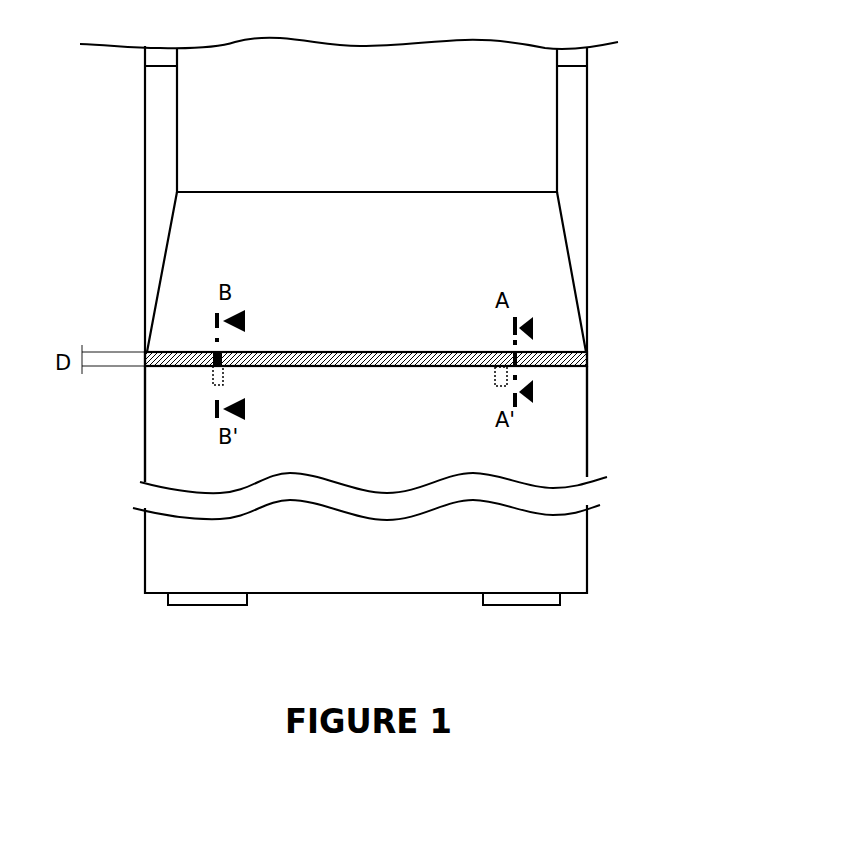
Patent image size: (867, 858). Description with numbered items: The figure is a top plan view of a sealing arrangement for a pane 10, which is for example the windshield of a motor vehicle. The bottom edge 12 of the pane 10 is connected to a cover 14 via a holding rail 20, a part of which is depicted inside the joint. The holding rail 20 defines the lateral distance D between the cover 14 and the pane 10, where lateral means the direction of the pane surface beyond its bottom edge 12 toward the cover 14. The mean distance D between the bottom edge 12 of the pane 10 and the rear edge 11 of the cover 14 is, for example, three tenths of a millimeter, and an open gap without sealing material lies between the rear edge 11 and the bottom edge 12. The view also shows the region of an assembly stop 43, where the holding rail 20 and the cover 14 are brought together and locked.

The pane 10 is at (558, 260).
The rear edge 11 is at (162, 382).
The bottom edge 12 is at (167, 342).
The cover 14 is at (528, 425).
The holding rail 20 is at (587, 353).
The assembly stop 43 is at (213, 383).